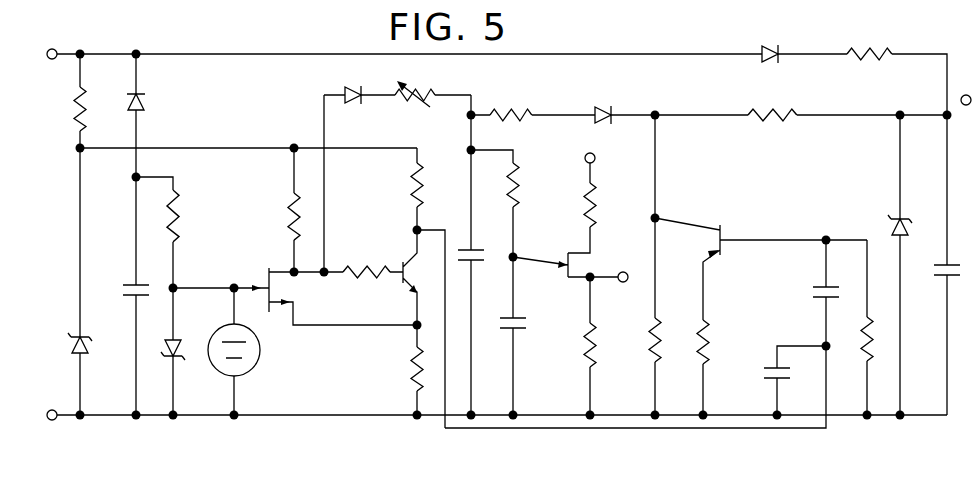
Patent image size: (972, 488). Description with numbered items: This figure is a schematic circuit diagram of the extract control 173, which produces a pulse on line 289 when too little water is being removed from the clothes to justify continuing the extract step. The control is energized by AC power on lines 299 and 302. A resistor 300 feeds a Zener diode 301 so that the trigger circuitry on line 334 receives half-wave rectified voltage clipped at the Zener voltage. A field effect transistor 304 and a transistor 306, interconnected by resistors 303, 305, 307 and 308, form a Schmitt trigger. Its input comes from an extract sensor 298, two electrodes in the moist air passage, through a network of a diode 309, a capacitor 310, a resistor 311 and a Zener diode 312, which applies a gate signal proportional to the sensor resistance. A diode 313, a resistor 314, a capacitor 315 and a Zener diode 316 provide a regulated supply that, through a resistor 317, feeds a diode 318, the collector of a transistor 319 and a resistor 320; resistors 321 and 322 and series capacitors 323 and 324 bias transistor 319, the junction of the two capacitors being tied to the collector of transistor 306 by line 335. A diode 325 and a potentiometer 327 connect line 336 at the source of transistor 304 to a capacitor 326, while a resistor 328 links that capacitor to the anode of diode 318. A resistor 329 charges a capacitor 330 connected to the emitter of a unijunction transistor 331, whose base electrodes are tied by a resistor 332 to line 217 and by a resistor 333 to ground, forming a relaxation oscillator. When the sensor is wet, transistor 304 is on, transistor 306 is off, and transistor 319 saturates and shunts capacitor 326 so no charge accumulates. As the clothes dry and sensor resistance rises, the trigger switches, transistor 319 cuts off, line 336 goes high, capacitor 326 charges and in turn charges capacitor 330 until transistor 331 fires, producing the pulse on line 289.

The extract control 173 is at (665, 47).
The line 217 is at (612, 165).
The line 289 is at (620, 265).
The extract sensor 298 is at (208, 374).
The line 299 is at (183, 60).
The resistor 300 is at (100, 92).
The Zener diode 301 is at (90, 353).
The line 302 is at (290, 415).
The resistor 303 is at (292, 216).
The field effect transistor 304 is at (295, 291).
The resistor 305 is at (413, 188).
The transistor 306 is at (404, 288).
The resistor 307 is at (358, 268).
The resistor 308 is at (411, 364).
The diode 309 is at (150, 102).
The capacitor 310 is at (128, 284).
The resistor 311 is at (180, 218).
The Zener diode 312 is at (180, 340).
The diode 313 is at (760, 62).
The resistor 314 is at (865, 60).
The capacitor 315 is at (940, 278).
The Zener diode 316 is at (900, 216).
The resistor 317 is at (775, 112).
The diode 318 is at (604, 106).
The transistor 319 is at (761, 257).
The resistor 320 is at (648, 358).
The resistor 321 is at (705, 330).
The resistor 322 is at (860, 330).
The capacitor 323 is at (815, 285).
The capacitor 324 is at (770, 368).
The diode 325 is at (347, 90).
The capacitor 326 is at (463, 246).
The potentiometer 327 is at (417, 92).
The resistor 328 is at (504, 112).
The resistor 329 is at (513, 172).
The capacitor 330 is at (518, 330).
The unijunction transistor 331 is at (565, 256).
The resistor 332 is at (584, 210).
The resistor 333 is at (584, 325).
The line 334 is at (195, 148).
The line 335 is at (540, 428).
The line 336 is at (322, 102).